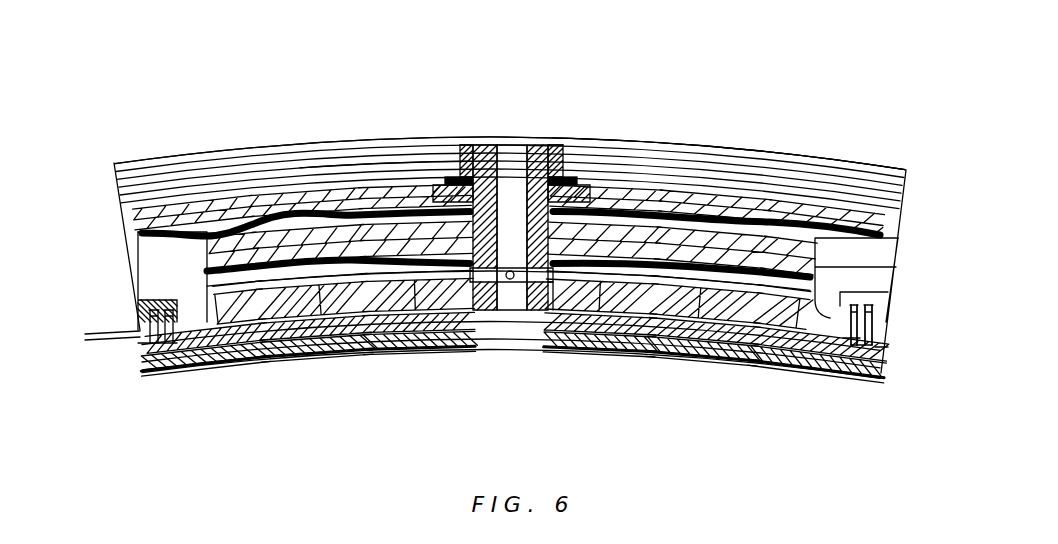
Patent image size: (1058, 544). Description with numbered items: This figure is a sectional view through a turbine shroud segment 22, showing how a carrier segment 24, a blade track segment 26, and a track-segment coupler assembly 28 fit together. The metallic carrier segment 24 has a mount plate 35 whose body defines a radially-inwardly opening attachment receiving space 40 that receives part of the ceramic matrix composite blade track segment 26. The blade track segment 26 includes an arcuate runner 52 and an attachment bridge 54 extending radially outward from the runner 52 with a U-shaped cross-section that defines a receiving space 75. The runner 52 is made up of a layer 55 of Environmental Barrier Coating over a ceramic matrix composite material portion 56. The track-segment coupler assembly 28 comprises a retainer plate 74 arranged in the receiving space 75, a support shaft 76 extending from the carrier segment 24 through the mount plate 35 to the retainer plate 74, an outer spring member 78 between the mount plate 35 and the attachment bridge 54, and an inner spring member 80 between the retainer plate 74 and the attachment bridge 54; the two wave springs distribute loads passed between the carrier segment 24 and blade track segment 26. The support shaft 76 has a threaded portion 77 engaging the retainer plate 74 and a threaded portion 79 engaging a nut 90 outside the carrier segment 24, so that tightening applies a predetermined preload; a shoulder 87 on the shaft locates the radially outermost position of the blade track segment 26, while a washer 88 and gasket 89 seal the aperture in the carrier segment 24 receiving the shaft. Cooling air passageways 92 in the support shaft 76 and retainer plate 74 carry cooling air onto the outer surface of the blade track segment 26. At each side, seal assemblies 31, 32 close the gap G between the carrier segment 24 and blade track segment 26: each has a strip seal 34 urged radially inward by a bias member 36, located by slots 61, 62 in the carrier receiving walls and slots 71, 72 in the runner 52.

The shroud segment 22 is at (738, 96).
The carrier segment 24 is at (661, 136).
The blade track segment 26 is at (686, 358).
The track-segment coupler assembly 28 is at (432, 160).
The seal assembly 31 is at (775, 400).
The seal assembly 32 is at (903, 423).
The strip seal 34 is at (838, 338).
The mount plate 35 is at (257, 162).
The bias member 36 is at (822, 333).
The attachment receiving space 40 is at (838, 258).
The runner 52 is at (233, 357).
The attachment bridge 54 is at (205, 253).
The layer of Environmental Barrier Coating 55 is at (137, 347).
The ceramic matrix composite material portion 56 is at (140, 368).
The slot 61 is at (830, 317).
The slot 62 is at (889, 320).
The slot 71 is at (857, 312).
The slot 72 is at (864, 322).
The retainer plate 74 is at (446, 300).
The receiving space 75 is at (200, 290).
The support shaft 76 is at (487, 145).
The threaded portion 77 is at (520, 146).
The outer spring member 78 is at (374, 277).
The threaded portion 79 is at (542, 293).
The inner spring member 80 is at (415, 277).
The shoulder 87 is at (571, 200).
The washer 88 is at (453, 173).
The gasket 89 is at (440, 198).
The nut 90 is at (525, 152).
The cooling air passageways 92 is at (500, 292).
The gap G is at (113, 372).